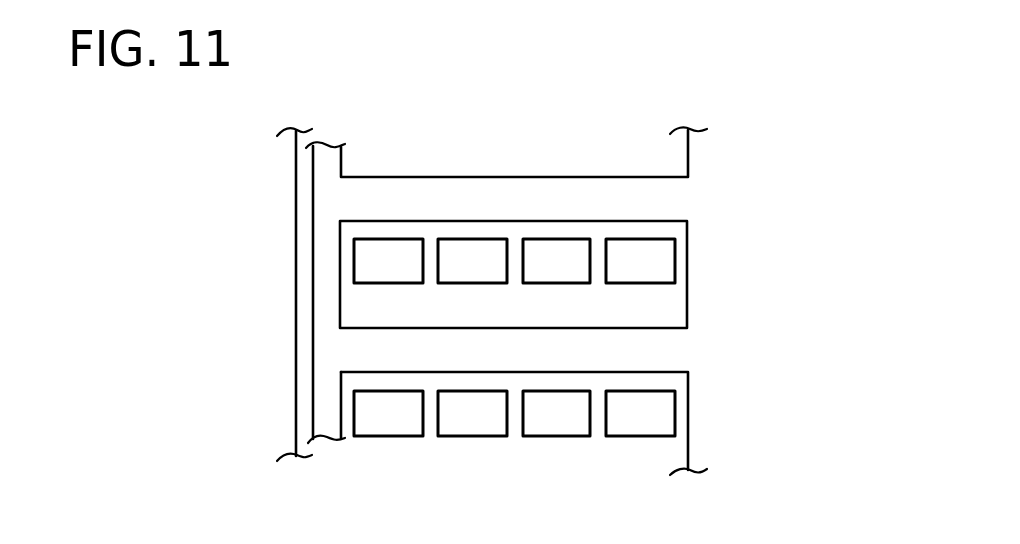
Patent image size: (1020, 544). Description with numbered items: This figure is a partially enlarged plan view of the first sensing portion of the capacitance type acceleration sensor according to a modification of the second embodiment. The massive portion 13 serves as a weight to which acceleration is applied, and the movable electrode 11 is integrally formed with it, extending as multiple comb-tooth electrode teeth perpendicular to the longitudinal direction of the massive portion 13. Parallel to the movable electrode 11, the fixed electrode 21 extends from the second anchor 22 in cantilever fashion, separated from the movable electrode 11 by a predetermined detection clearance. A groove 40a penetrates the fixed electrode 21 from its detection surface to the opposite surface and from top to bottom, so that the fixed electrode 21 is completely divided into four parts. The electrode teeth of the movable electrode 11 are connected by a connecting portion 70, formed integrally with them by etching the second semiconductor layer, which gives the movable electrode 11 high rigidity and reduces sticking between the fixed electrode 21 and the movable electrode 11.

The movable electrode 11 is at (578, 192).
The massive portion 13 is at (719, 259).
The fixed electrode 21 is at (471, 242).
The second anchor 22 is at (286, 246).
The connecting portion 70 is at (326, 309).
The groove 40a is at (600, 427).